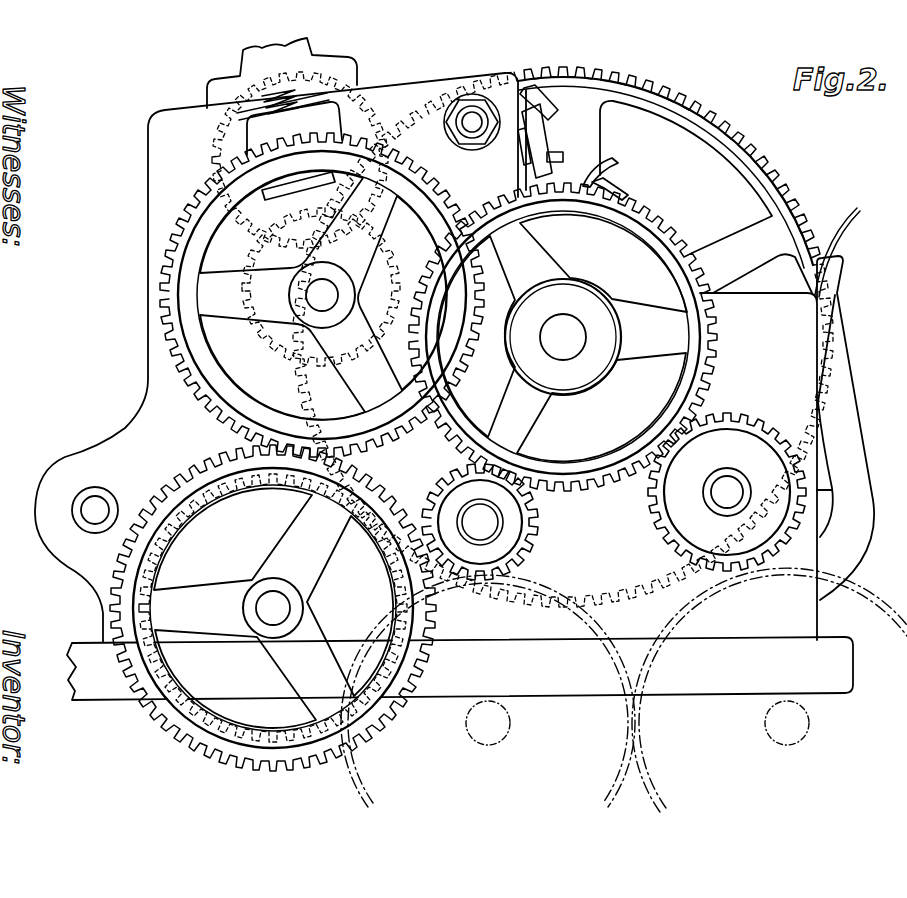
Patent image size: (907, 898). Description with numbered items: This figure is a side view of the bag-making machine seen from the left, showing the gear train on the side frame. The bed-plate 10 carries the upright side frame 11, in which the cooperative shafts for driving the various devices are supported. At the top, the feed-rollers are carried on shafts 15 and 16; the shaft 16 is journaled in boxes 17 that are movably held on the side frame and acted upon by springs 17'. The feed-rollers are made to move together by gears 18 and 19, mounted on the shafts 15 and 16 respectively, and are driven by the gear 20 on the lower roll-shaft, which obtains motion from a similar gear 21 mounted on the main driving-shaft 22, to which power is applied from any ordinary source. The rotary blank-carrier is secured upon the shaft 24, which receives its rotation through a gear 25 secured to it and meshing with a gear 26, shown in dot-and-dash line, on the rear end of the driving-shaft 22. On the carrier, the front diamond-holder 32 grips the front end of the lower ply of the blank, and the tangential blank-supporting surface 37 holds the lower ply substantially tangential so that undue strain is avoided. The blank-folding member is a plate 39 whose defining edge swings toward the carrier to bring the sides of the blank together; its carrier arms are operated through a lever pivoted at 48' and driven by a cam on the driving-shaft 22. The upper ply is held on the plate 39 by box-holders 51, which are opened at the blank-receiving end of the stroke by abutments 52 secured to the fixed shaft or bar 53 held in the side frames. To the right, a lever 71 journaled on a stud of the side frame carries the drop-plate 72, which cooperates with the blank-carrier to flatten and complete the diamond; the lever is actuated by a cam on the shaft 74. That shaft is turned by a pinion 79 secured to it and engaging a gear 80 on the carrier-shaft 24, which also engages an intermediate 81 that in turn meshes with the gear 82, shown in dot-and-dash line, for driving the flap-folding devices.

The bed-plate 10 is at (460, 668).
The upright side frame 11 is at (758, 447).
The shaft 15 is at (325, 292).
The shaft 16 is at (294, 128).
The boxes 17 is at (238, 125).
The springs 17' is at (257, 111).
The gear 18 is at (252, 252).
The gear 19 is at (360, 101).
The gear 20 is at (193, 385).
The gear 21 is at (178, 478).
The main driving-shaft 22 is at (272, 604).
The shaft 24 is at (563, 337).
The gear 25 is at (733, 128).
The gear 26 is at (400, 622).
The front diamond-holder 32 is at (626, 190).
The tangential blank-supporting surface 37 is at (583, 186).
The plate 39 is at (562, 158).
The pivot 48' is at (95, 497).
The box-holders 51 is at (545, 145).
The abutments 52 is at (539, 103).
The fixed shaft or bar 53 is at (472, 124).
The lever 71 is at (845, 428).
The drop-plate 72 is at (840, 240).
The shaft 74 is at (728, 490).
The pinion 79 is at (755, 423).
The gear 80 is at (675, 228).
The intermediate 81 is at (538, 522).
The gear 82 is at (604, 627).